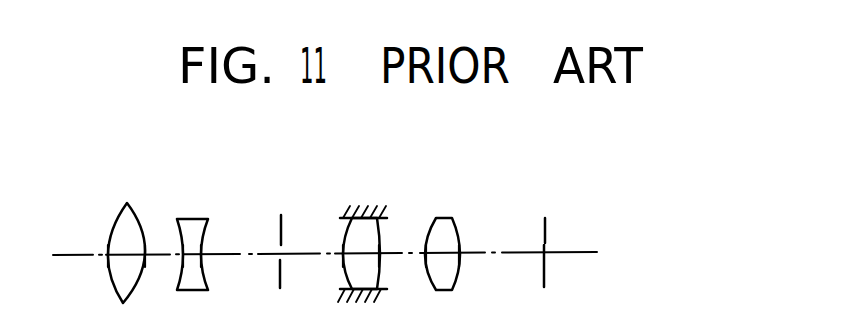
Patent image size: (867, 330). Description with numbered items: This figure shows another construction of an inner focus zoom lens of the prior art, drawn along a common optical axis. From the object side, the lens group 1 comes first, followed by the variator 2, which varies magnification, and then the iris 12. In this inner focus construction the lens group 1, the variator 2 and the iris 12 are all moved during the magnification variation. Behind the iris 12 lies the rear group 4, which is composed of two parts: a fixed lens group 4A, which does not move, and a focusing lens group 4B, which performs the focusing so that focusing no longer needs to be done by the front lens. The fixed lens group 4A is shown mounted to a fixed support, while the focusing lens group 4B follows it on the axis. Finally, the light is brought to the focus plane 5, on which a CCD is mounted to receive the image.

The lens group 1 is at (137, 212).
The variator 2 is at (196, 218).
The iris 12 is at (281, 231).
The focusing lens group 4 is at (473, 162).
The fixed lens group 4A is at (373, 233).
The focusing lens group 4B is at (443, 219).
The focus plane 5 is at (545, 232).